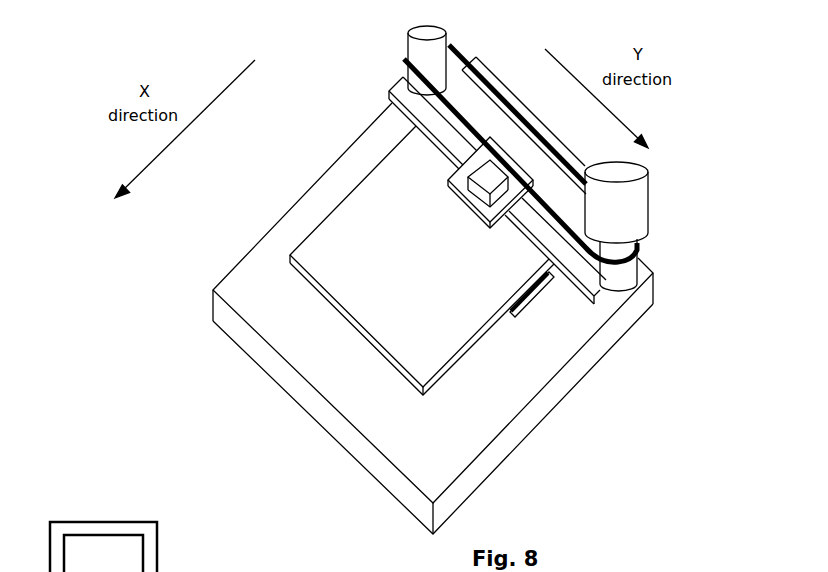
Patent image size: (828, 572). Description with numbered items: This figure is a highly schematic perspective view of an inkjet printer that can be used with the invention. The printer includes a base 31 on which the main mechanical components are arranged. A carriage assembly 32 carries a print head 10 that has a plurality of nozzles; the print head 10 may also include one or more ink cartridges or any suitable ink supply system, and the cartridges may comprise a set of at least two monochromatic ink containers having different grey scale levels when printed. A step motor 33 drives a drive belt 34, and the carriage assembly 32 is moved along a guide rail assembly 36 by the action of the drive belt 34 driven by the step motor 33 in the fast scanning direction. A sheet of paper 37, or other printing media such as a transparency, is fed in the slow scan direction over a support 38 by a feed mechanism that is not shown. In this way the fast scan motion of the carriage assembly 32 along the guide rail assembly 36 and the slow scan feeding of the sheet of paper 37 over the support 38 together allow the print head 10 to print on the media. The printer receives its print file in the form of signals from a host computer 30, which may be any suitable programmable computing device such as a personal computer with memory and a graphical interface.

The print head 10 is at (482, 177).
The host computer 30 is at (147, 571).
The base 31 is at (231, 317).
The carriage assembly 32 is at (446, 175).
The step motor 33 is at (623, 202).
The drive belt 34 is at (428, 101).
The guide rail assembly 36 is at (565, 232).
The sheet of paper 37 is at (420, 317).
The support 38 is at (533, 290).